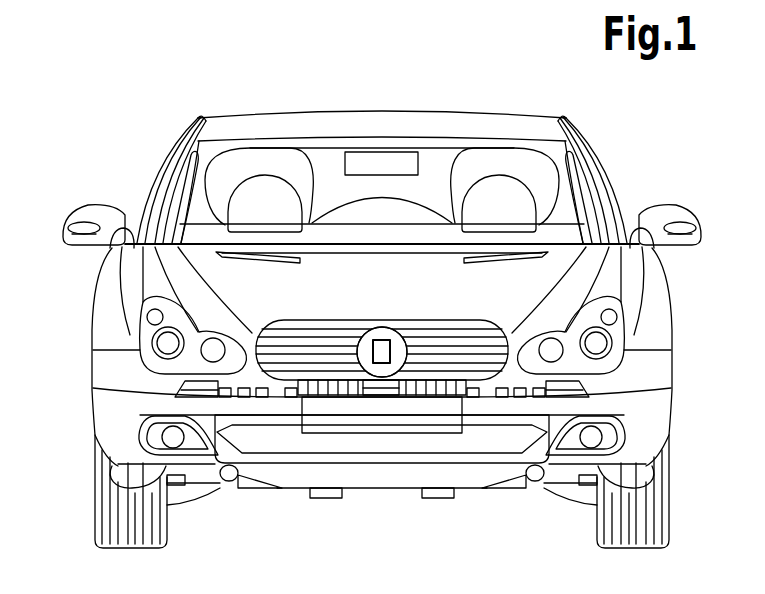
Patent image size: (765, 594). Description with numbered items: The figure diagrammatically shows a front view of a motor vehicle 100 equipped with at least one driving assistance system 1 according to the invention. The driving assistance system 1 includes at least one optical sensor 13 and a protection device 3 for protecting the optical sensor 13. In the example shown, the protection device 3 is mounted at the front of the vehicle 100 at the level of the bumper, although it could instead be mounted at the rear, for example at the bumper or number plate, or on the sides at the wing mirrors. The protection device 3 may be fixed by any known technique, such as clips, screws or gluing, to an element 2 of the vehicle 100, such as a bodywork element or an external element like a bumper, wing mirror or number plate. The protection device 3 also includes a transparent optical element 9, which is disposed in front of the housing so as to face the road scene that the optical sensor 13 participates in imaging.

The motor vehicle 100 is at (136, 167).
The driving assistance system 1 is at (380, 298).
The element of the vehicle 2 is at (400, 347).
The protection device 3 is at (344, 359).
The optical sensor 13 is at (390, 330).
The transparent optical element 9 is at (383, 363).